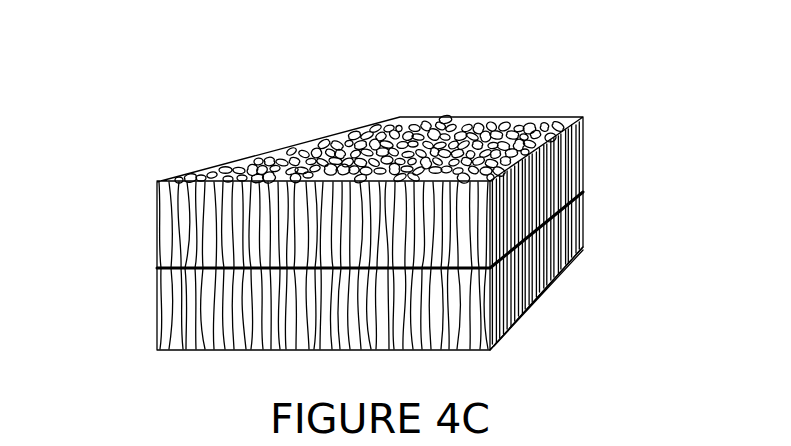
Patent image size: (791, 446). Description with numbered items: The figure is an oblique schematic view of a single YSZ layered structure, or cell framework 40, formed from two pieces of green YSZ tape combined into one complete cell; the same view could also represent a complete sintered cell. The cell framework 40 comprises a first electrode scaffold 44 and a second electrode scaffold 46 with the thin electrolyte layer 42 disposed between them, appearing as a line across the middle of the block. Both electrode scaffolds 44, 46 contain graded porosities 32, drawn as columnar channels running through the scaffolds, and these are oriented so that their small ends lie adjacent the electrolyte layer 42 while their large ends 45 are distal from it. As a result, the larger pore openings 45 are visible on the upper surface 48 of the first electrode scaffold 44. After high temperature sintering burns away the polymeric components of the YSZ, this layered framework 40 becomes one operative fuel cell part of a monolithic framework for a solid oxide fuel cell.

The layered single-cell framework structure 40 is at (562, 51).
The electrolyte layer 42 is at (177, 267).
The first electrode scaffold 44 is at (570, 163).
The larger pore openings 45 is at (317, 183).
The second electrode scaffold 46 is at (550, 247).
The upper surface 48 is at (380, 135).
The graded porosities 32 is at (317, 322).